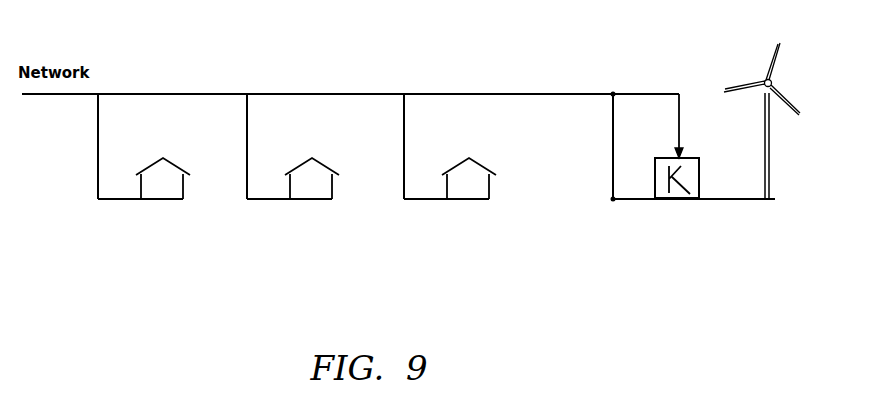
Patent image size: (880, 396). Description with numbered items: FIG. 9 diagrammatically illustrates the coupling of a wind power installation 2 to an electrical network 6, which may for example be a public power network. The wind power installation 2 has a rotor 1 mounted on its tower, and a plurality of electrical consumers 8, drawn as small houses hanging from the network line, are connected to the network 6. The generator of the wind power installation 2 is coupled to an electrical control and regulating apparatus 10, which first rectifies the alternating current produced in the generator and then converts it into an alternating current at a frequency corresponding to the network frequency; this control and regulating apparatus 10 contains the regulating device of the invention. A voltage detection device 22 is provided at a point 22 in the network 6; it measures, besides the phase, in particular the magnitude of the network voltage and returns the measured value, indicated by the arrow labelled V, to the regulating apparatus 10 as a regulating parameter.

The rotor 1 is at (781, 81).
The wind power installation 2 is at (784, 130).
The electrical network 6 is at (158, 84).
The electrical consumers 8 is at (162, 216).
The control and regulating apparatus 10 is at (663, 200).
The voltage detection device 22 is at (618, 135).